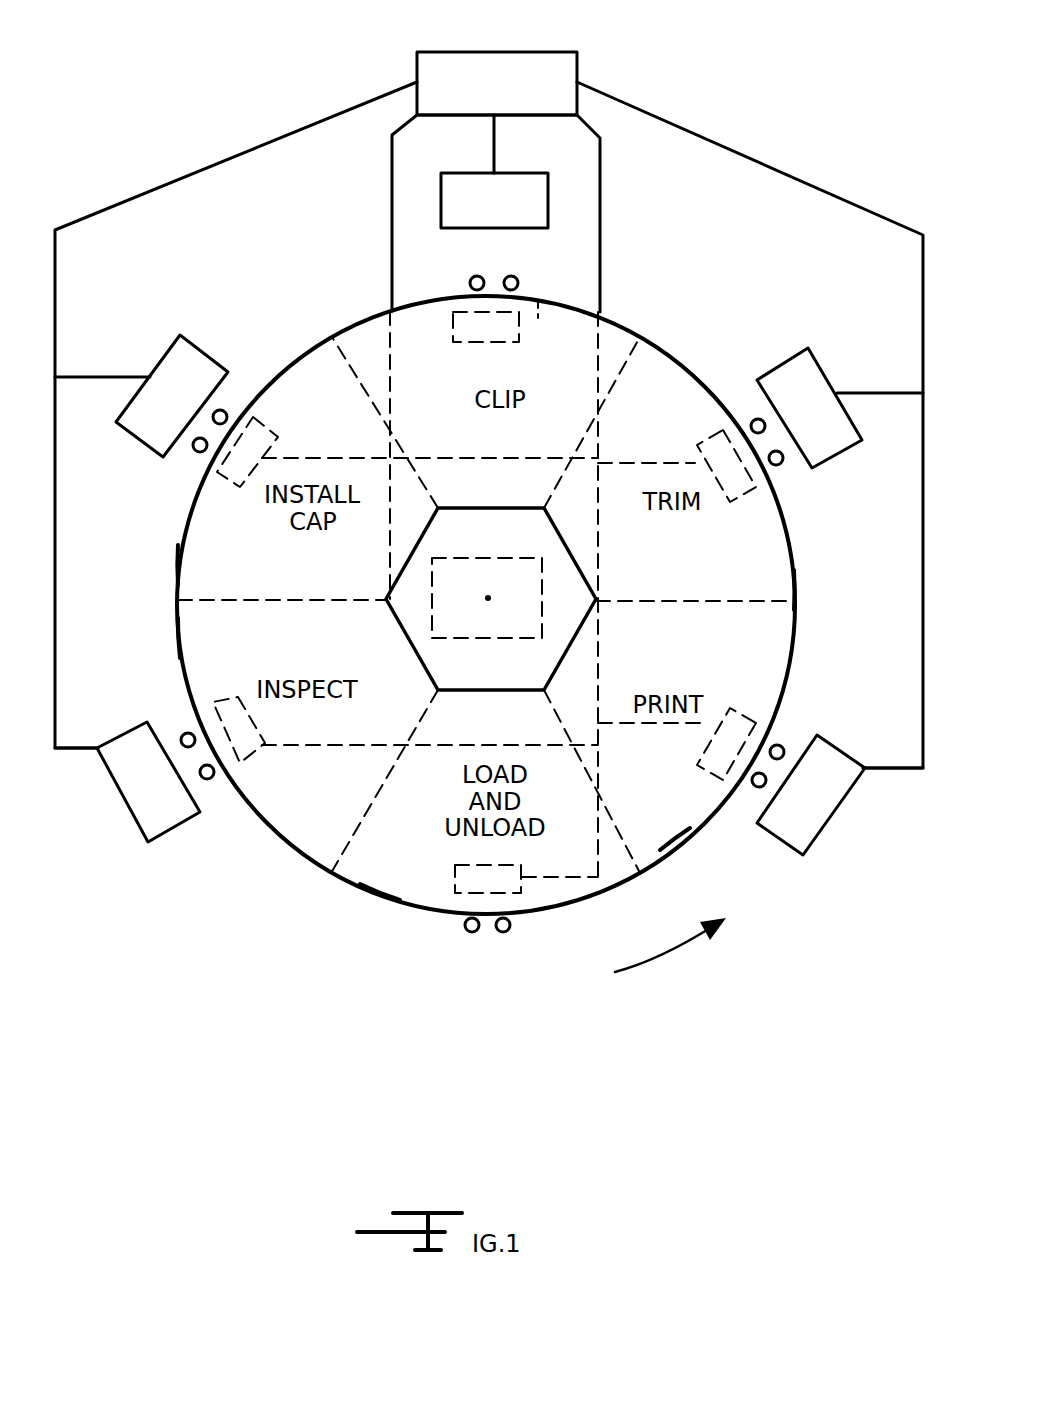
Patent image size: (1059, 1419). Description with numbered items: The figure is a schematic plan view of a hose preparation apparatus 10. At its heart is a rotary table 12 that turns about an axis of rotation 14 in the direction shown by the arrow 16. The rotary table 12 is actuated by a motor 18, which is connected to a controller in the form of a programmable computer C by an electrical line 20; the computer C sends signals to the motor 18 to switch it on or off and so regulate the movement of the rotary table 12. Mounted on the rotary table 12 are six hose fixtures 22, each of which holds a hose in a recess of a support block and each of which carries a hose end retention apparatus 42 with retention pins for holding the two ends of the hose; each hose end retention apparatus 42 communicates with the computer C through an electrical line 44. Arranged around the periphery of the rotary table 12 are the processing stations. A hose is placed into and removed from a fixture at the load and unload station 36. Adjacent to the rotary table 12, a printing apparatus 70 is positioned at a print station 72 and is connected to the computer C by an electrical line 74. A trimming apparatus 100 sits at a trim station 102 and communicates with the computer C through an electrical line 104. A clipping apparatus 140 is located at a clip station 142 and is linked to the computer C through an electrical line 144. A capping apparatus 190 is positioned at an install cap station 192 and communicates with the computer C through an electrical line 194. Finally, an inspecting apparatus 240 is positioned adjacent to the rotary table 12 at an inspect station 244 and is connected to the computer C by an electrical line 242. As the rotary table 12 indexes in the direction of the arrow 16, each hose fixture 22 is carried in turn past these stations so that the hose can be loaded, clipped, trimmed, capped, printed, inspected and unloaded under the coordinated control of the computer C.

The hose preparation apparatus 10 is at (688, 58).
The rotary table 12 is at (290, 842).
The axis of rotation 14 is at (488, 596).
The arrow 16 is at (675, 952).
The motor 18 is at (512, 648).
The electrical line 20 is at (392, 215).
The hose fixture 22 is at (511, 291).
The load and unload station 36 is at (378, 889).
The hose end retention apparatus 42 is at (452, 332).
The electrical line 44 is at (600, 246).
The printing apparatus 70 is at (803, 856).
The print station 72 is at (672, 845).
The electrical line 74 is at (890, 768).
The trimming apparatus 100 is at (778, 366).
The trim station 102 is at (788, 589).
The electrical line 104 is at (885, 393).
The clipping apparatus 140 is at (548, 186).
The clip station 142 is at (540, 314).
The electrical line 144 is at (497, 133).
The capping apparatus 190 is at (201, 350).
The install cap station 192 is at (185, 566).
The electrical line 194 is at (72, 377).
The inspecting apparatus 240 is at (154, 840).
The electrical line 242 is at (80, 747).
The inspect station 244 is at (186, 638).